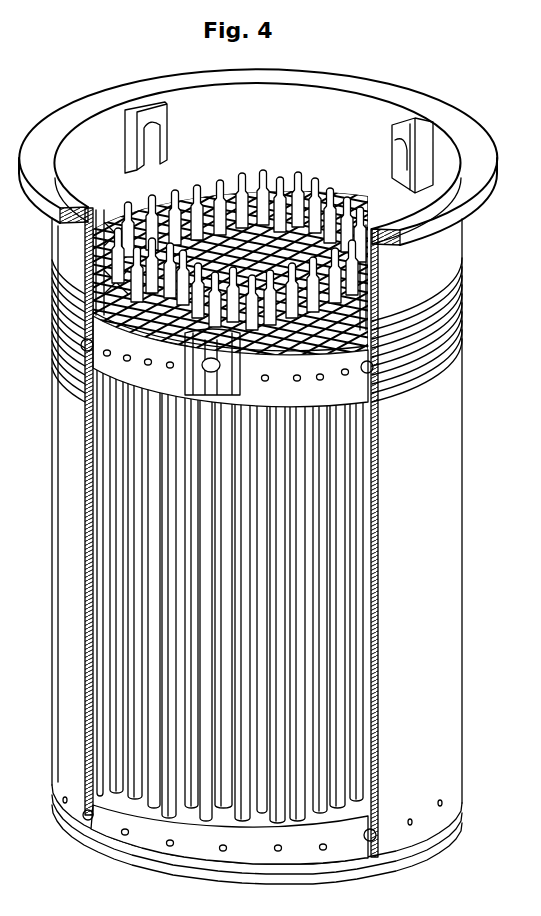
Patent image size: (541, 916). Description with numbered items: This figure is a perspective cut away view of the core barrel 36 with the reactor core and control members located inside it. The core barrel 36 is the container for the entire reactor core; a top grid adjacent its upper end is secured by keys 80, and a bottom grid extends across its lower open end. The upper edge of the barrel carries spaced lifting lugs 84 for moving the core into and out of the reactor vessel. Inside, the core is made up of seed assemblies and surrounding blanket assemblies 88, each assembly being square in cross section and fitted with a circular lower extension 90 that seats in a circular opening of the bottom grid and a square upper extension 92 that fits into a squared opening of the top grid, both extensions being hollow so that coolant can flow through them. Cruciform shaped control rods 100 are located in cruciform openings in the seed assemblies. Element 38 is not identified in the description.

The core barrel 36 is at (462, 553).
The top flange ring 38 is at (487, 152).
The keys 80 is at (366, 371).
The lifting lugs 84 is at (160, 128).
The blanket assemblies 88 is at (376, 780).
The circular lower extension 90 is at (322, 815).
The square upper extension 92 is at (228, 376).
The cruciform shaped control rod 100 is at (248, 200).